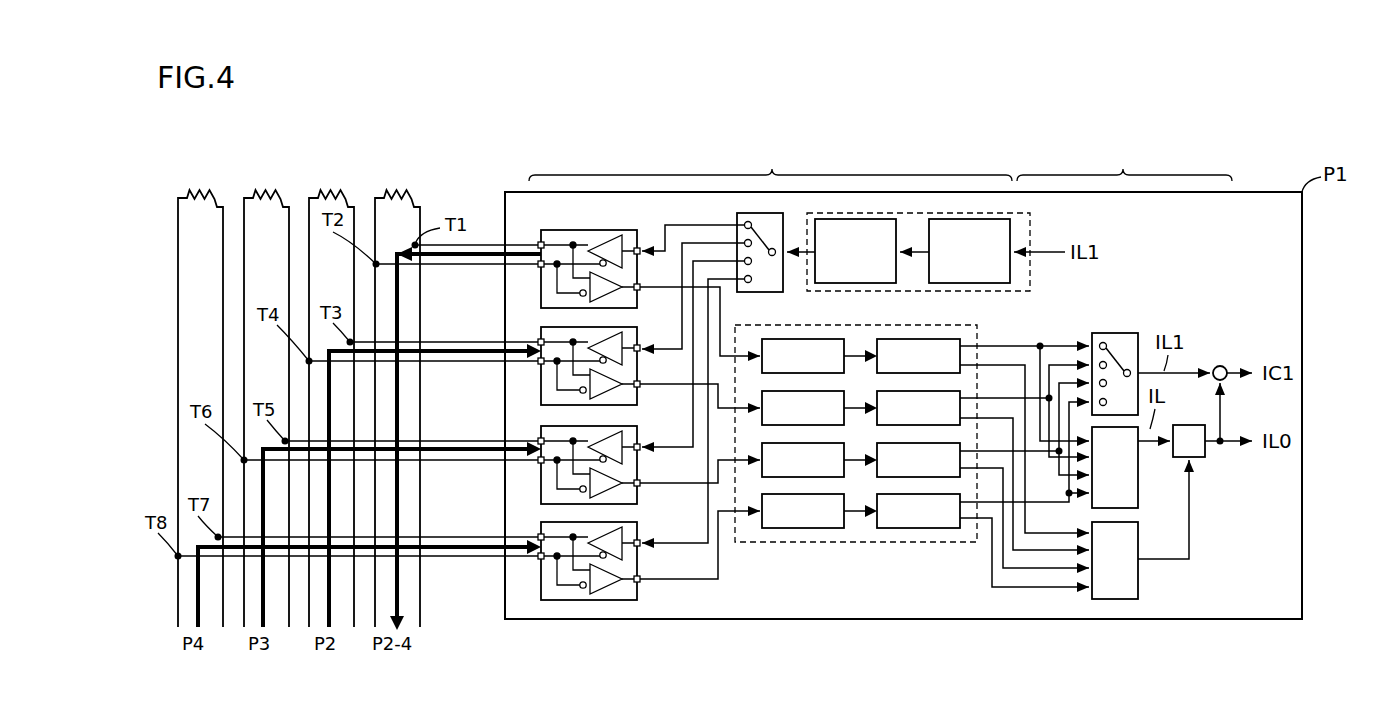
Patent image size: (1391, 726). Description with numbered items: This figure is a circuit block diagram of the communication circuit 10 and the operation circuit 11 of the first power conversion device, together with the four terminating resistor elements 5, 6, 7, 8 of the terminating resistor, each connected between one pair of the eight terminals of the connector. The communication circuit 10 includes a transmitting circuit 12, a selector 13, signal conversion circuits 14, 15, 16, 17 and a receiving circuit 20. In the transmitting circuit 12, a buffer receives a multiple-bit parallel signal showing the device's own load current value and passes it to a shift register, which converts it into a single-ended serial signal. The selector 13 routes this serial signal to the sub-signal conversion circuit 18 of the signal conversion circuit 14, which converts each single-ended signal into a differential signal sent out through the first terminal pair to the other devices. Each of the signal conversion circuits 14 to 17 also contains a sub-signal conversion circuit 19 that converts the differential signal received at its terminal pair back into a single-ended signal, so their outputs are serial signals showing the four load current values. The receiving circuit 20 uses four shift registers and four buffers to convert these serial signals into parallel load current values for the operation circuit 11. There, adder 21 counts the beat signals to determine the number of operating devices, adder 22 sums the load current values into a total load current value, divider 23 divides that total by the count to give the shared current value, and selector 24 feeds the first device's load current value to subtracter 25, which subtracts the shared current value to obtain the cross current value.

The terminating resistor element 5 is at (395, 188).
The terminating resistor element 6 is at (329, 188).
The terminating resistor element 7 is at (264, 188).
The terminating resistor element 8 is at (198, 188).
The communication circuit 10 is at (770, 164).
The operation circuit 11 is at (1124, 164).
The transmitting circuit 12 is at (1031, 225).
The selector 13 is at (737, 218).
The signal conversion circuit 14 is at (548, 228).
The signal conversion circuit 15 is at (548, 325).
The signal conversion circuit 16 is at (548, 424).
The signal conversion circuit 17 is at (548, 520).
The sub-signal conversion circuit 18 is at (617, 257).
The sub-signal conversion circuit 19 is at (610, 290).
The receiving circuit 20 is at (855, 548).
The adder 21 is at (1139, 591).
The adder 22 is at (1139, 500).
The divider 23 is at (1197, 460).
The selector 24 is at (1122, 333).
The subtracter 25 is at (1220, 365).